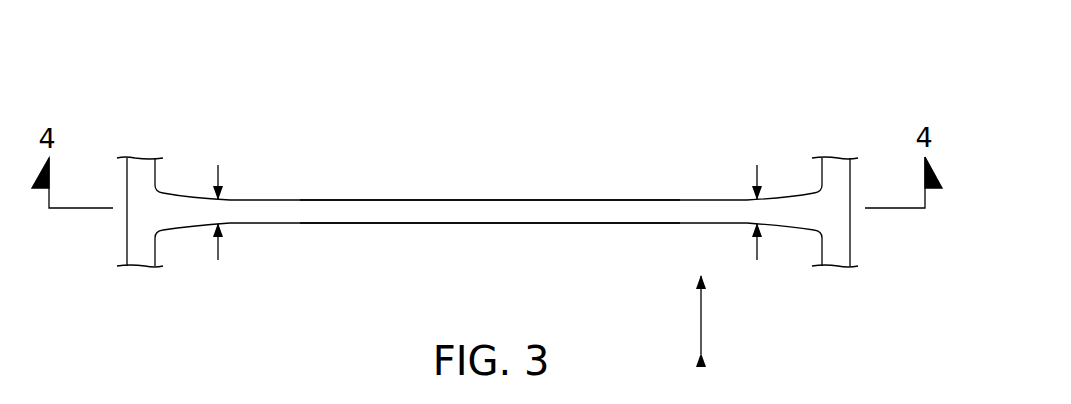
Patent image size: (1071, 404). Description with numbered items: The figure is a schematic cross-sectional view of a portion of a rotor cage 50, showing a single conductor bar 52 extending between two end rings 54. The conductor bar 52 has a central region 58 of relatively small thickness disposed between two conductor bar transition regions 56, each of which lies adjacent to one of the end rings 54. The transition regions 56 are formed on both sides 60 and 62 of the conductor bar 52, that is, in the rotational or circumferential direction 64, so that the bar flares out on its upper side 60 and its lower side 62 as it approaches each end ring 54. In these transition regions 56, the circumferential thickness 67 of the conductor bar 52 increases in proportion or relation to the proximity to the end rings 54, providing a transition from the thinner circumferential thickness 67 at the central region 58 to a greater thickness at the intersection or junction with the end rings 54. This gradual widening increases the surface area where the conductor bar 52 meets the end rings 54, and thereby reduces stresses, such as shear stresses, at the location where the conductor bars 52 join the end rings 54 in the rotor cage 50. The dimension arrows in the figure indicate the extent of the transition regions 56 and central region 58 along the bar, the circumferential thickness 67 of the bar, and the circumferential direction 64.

The rotor cage 50 is at (841, 49).
The conductor bar 52 is at (351, 299).
The end rings 54 is at (125, 233).
The conductor bar transition regions 56 is at (238, 178).
The central region 58 is at (498, 127).
The side of conductor bar 60 is at (475, 39).
The side of conductor bar 62 is at (508, 325).
The rotational or circumferential direction 64 is at (701, 312).
The circumferential thickness 67 is at (219, 252).